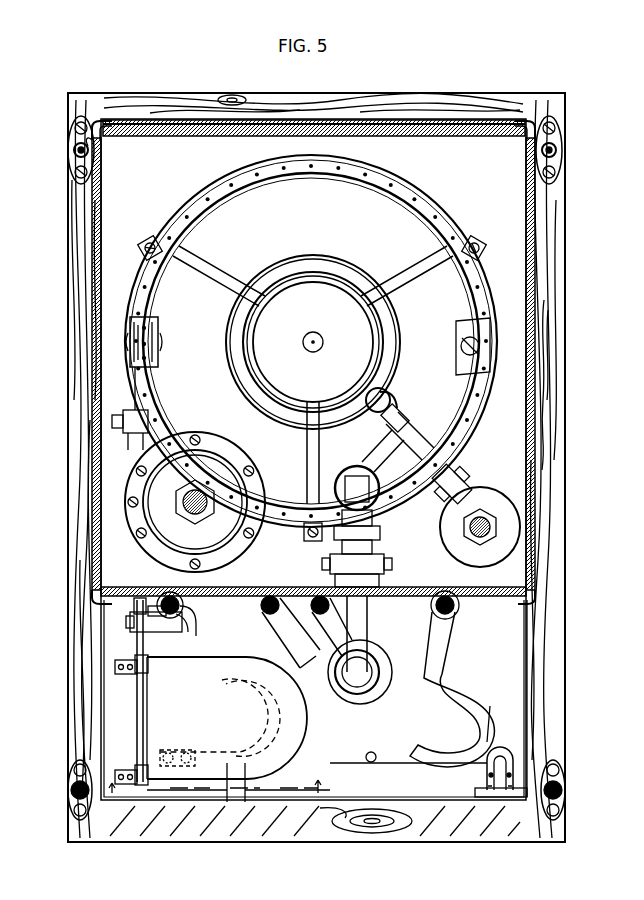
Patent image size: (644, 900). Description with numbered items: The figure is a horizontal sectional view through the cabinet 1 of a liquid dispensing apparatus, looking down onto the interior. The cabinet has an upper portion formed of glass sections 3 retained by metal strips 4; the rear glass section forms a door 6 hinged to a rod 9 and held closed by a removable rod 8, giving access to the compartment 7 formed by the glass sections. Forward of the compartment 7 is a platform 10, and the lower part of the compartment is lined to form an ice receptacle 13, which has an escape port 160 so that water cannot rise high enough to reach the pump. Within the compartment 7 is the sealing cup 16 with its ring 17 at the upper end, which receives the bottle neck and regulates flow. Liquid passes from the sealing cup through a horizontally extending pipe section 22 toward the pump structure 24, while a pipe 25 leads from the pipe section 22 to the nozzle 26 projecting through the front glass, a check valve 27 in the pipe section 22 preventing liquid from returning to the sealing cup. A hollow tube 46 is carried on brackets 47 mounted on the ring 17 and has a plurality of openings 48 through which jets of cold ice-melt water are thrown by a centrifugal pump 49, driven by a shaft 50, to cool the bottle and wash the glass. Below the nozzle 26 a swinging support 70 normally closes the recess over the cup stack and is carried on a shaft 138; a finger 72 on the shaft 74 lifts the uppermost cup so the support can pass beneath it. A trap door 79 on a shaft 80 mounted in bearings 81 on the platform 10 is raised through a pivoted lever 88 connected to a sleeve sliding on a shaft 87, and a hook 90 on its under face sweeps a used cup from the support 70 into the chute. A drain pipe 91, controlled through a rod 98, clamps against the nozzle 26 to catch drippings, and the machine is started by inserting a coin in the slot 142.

The cabinet 1 is at (68, 291).
The glass section 3 is at (527, 336).
The metal strip 4 is at (101, 210).
The door 6 is at (460, 126).
The compartment 7 is at (518, 212).
The removable rod 8 is at (558, 145).
The rod 9 is at (70, 150).
The platform 10 is at (517, 660).
The ice receptacle 13 is at (226, 793).
The sealing cup 16 is at (352, 286).
The ring 17 is at (326, 272).
The horizontally extending pipe section 22 is at (422, 438).
The pump structure 24 is at (513, 524).
The pipe 25 is at (385, 448).
The nozzle 26 is at (368, 628).
The check valve 27 is at (398, 400).
The hollow tube 46 is at (425, 208).
The bracket 47 is at (205, 268).
The opening 48 is at (470, 425).
The centrifugal pump 49 is at (248, 540).
The shaft 50 is at (195, 516).
The swinging support 70 is at (378, 692).
The finger 72 is at (441, 652).
The shaft 74 is at (458, 608).
The trap door 79 is at (212, 792).
The shaft 80 is at (145, 702).
The bearing 81 is at (140, 790).
The shaft 87 is at (190, 626).
The pivoted lever 88 is at (150, 612).
The hook 90 is at (240, 706).
The drain pipe 91 is at (330, 636).
The rod 98 is at (290, 636).
The shaft 138 is at (262, 606).
The slot 142 is at (498, 798).
The escape port 160 is at (457, 340).